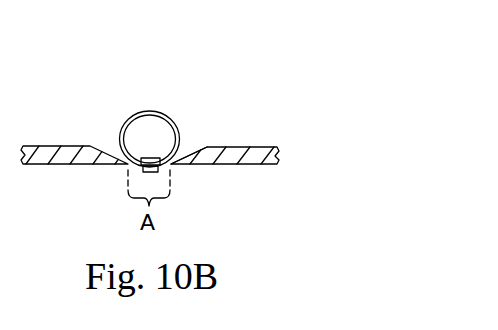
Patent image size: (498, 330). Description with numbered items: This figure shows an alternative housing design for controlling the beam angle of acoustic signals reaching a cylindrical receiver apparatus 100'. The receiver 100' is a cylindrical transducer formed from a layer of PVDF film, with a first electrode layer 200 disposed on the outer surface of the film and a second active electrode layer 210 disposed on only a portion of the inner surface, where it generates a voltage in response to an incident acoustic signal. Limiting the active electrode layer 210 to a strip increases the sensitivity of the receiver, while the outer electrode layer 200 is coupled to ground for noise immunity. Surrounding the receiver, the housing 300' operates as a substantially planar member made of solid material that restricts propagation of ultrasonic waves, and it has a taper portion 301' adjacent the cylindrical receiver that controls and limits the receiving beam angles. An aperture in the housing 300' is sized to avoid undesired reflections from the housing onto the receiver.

The receiver 100' is at (186, 116).
The second active electrode layer 210 is at (148, 158).
The first electrode layer 200 is at (152, 172).
The housing 300' is at (276, 192).
The taper portion 301' is at (74, 122).